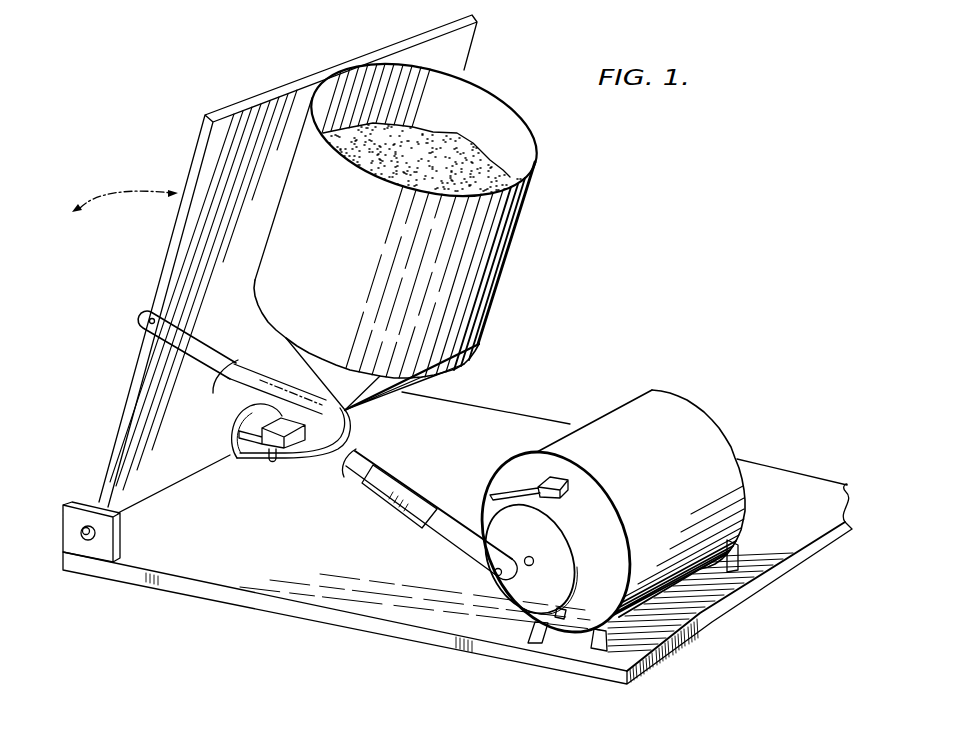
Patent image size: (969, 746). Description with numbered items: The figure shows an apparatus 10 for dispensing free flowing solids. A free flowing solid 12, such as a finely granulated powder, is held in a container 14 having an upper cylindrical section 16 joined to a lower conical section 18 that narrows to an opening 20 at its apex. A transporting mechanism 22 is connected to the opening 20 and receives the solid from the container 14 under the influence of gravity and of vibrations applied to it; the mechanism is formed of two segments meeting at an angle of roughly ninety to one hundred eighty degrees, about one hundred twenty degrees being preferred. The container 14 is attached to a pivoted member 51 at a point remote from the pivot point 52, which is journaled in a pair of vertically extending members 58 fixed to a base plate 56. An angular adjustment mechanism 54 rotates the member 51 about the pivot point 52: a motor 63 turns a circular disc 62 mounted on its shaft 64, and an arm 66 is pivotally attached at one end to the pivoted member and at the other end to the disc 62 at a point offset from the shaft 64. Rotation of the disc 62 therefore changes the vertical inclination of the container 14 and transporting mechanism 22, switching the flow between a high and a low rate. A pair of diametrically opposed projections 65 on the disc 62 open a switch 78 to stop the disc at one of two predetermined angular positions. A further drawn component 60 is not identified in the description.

The apparatus 10 is at (292, 64).
The free flowing solid 12 is at (448, 152).
The container 14 is at (435, 225).
The cylindrical section 16 is at (487, 281).
The lower conical section 18 is at (428, 380).
The opening 20 is at (291, 434).
The transporting mechanism 22 is at (300, 465).
The pivoted member 51 is at (152, 271).
The pivot point 52 is at (87, 541).
The angular adjustment mechanism 54 is at (629, 482).
The base plate 56 is at (217, 592).
The vertically extending member 58 is at (108, 544).
The motor 60 is at (722, 513).
The circular disc 62 is at (489, 527).
The motor 63 is at (710, 441).
The shaft 64 is at (529, 566).
The projections 65 is at (566, 612).
The arm 66 is at (443, 534).
The switch 78 is at (563, 493).